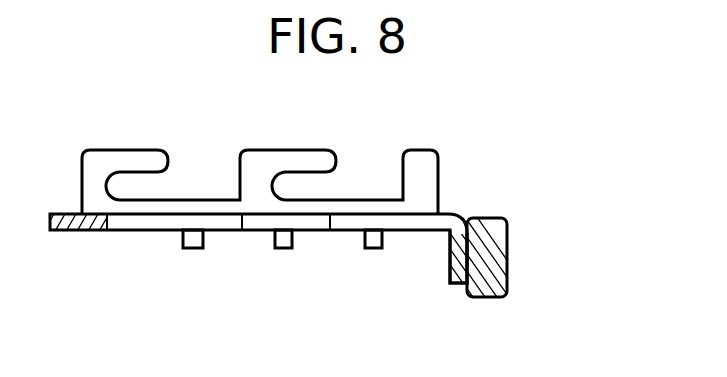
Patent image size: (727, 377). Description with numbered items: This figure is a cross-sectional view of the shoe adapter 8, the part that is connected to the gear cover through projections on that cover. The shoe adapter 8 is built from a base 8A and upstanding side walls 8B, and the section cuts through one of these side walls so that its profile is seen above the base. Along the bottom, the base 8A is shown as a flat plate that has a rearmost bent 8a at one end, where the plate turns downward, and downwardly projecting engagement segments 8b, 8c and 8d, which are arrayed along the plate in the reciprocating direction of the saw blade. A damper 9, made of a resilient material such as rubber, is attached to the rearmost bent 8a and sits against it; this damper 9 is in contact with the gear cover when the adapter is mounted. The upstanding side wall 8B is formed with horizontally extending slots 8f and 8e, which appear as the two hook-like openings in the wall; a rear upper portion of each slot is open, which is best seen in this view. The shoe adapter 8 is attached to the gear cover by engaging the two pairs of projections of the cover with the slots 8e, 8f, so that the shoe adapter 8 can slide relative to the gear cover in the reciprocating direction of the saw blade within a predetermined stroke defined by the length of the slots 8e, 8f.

The shoe adapter 8 is at (578, 136).
The base 8A is at (63, 231).
The upstanding side wall 8B is at (93, 162).
The slot 8f is at (143, 172).
The slot 8e is at (305, 188).
The engagement segment 8d is at (182, 247).
The engagement segment 8c is at (273, 249).
The engagement segment 8b is at (362, 249).
The rearmost bent 8a is at (446, 247).
The damper 9 is at (477, 235).